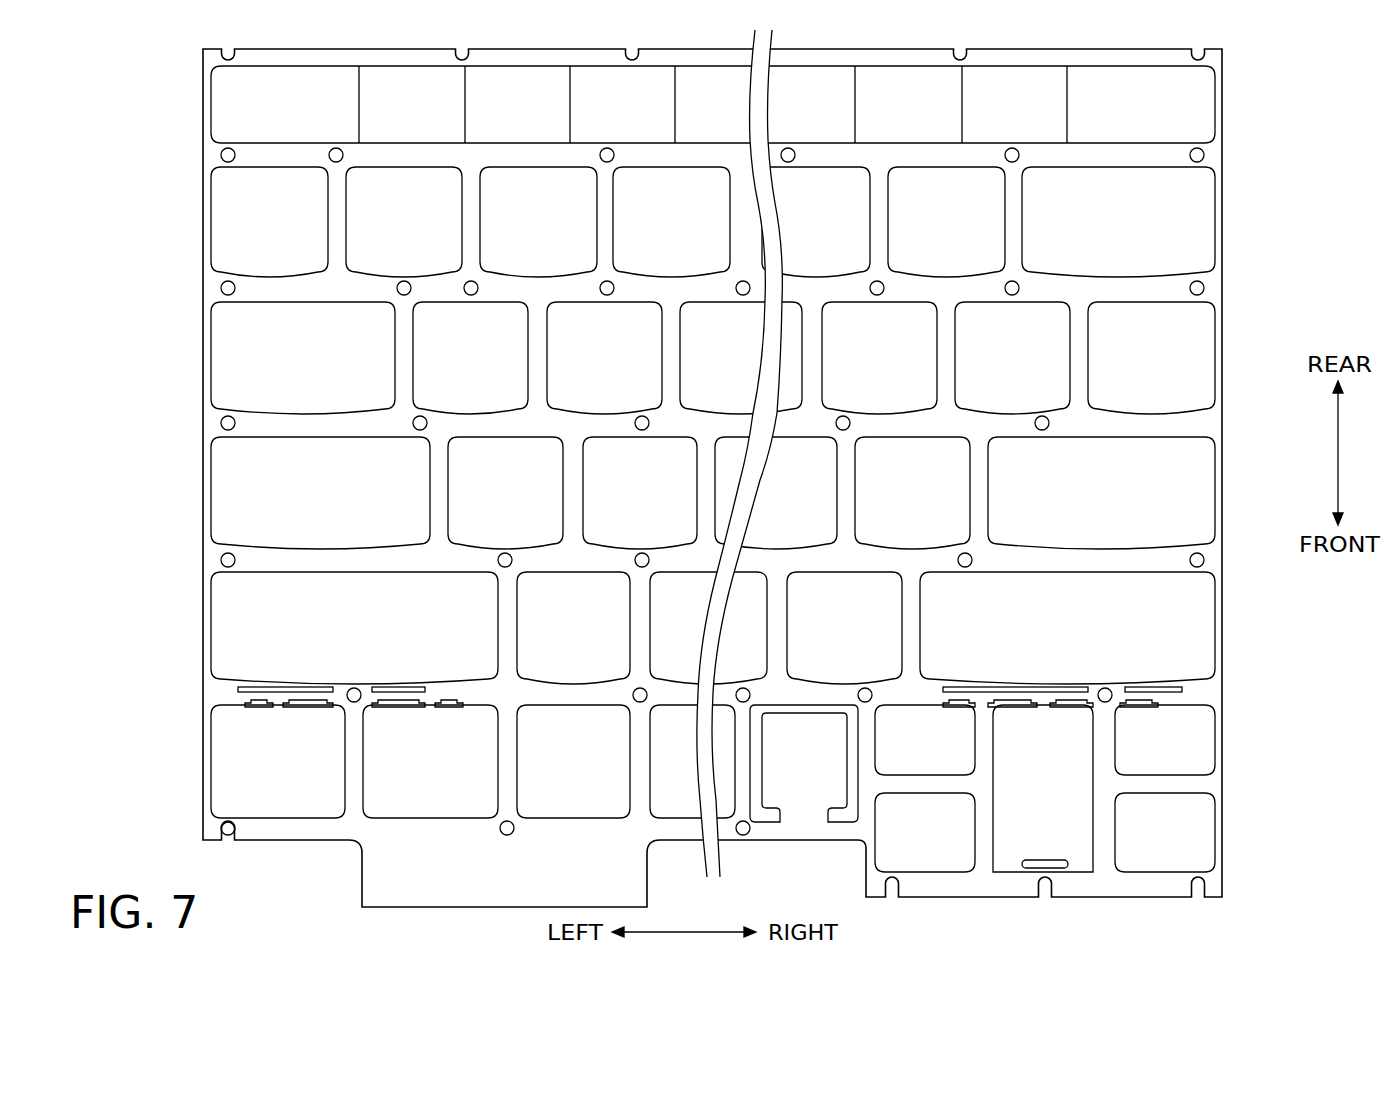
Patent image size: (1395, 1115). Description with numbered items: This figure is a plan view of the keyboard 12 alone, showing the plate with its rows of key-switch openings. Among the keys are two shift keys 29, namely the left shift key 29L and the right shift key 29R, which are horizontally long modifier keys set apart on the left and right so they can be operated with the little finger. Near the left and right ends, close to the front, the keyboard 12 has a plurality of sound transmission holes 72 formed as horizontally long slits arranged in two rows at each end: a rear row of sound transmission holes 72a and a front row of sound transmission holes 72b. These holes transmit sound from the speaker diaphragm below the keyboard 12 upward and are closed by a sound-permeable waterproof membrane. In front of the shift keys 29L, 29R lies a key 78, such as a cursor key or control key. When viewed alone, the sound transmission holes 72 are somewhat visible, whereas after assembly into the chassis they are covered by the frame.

The keyboard 12 is at (712, 471).
The shift keys 29 is at (713, 628).
The left shift key 29L is at (235, 602).
The right shift key 29R is at (1190, 602).
The sound transmission holes 72 is at (712, 703).
The rear row of sound transmission holes 72a is at (283, 688).
The front row of sound transmission holes 72b is at (447, 711).
The key 78 is at (395, 797).